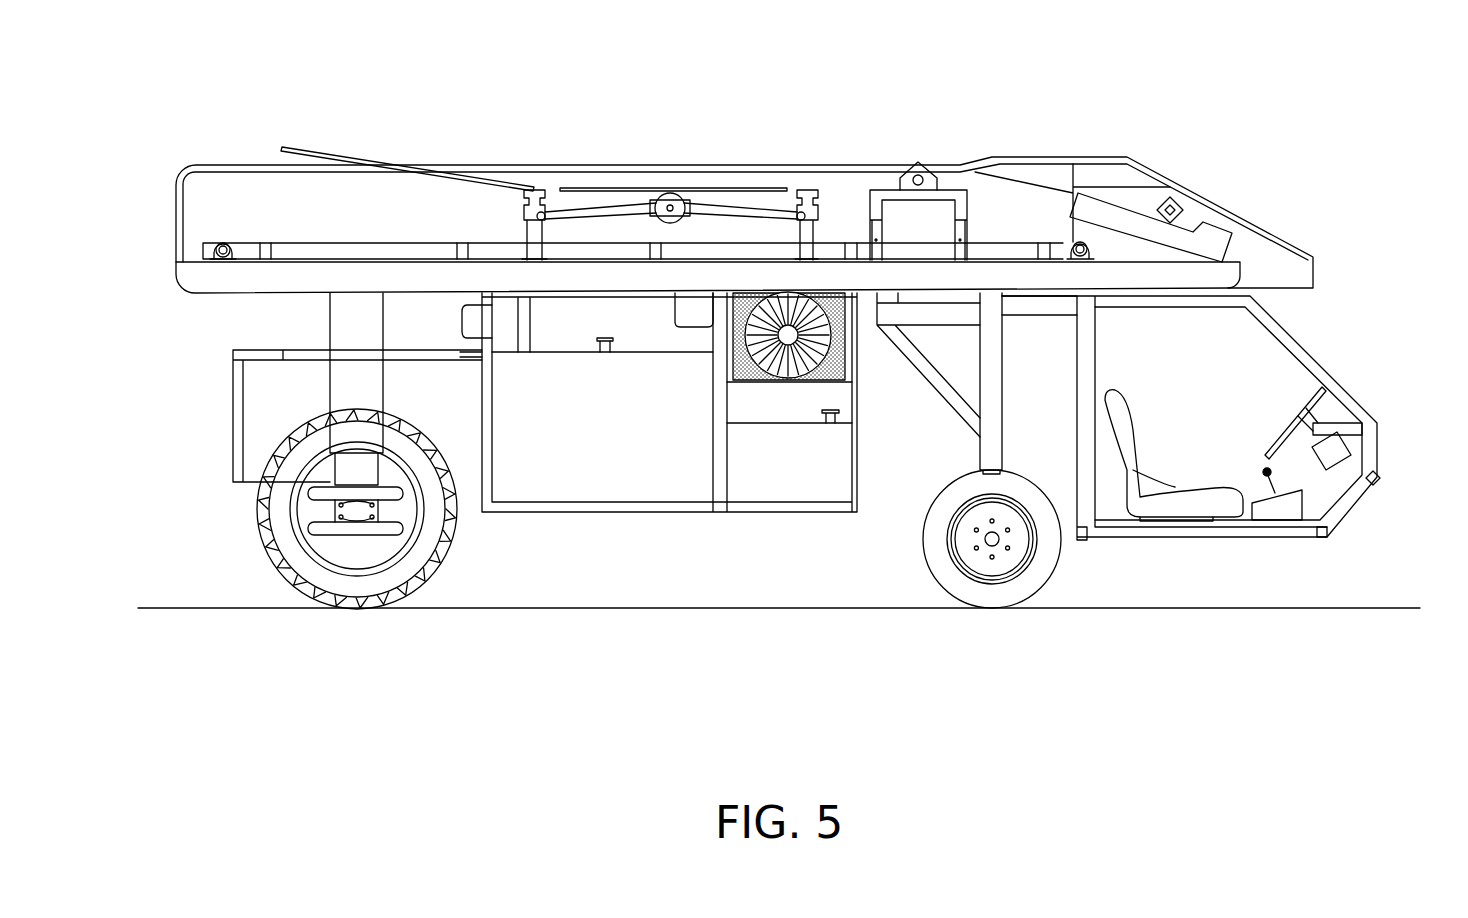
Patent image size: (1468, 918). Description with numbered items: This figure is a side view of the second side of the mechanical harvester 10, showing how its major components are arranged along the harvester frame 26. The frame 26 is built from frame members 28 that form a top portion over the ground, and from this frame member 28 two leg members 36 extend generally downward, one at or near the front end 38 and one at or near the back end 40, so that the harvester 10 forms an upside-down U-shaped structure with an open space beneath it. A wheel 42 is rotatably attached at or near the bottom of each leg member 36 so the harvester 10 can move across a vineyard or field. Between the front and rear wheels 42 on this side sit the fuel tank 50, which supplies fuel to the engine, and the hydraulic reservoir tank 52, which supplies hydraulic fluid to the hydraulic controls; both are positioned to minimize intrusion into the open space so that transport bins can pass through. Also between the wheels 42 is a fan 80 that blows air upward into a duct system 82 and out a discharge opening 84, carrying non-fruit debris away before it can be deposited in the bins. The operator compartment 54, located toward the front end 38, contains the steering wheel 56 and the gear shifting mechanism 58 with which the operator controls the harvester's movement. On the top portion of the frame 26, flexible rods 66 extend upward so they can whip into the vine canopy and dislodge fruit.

The mechanical harvester 10 is at (1212, 117).
The harvester frame 26 is at (1358, 408).
The frame member 28 is at (190, 283).
The leg member 36 is at (340, 395).
The front end 38 is at (1348, 367).
The back end 40 is at (220, 370).
The wheel 42 is at (258, 540).
The fuel tank 50 is at (768, 493).
The hydraulic reservoir tank 52 is at (567, 488).
The operator compartment 54 is at (1252, 342).
The steering wheel 56 is at (1277, 440).
The gear shifting mechanism 58 is at (1297, 503).
The rod 66 is at (332, 155).
The fan 80 is at (843, 362).
The duct system 82 is at (1193, 208).
The discharge opening 84 is at (1178, 200).